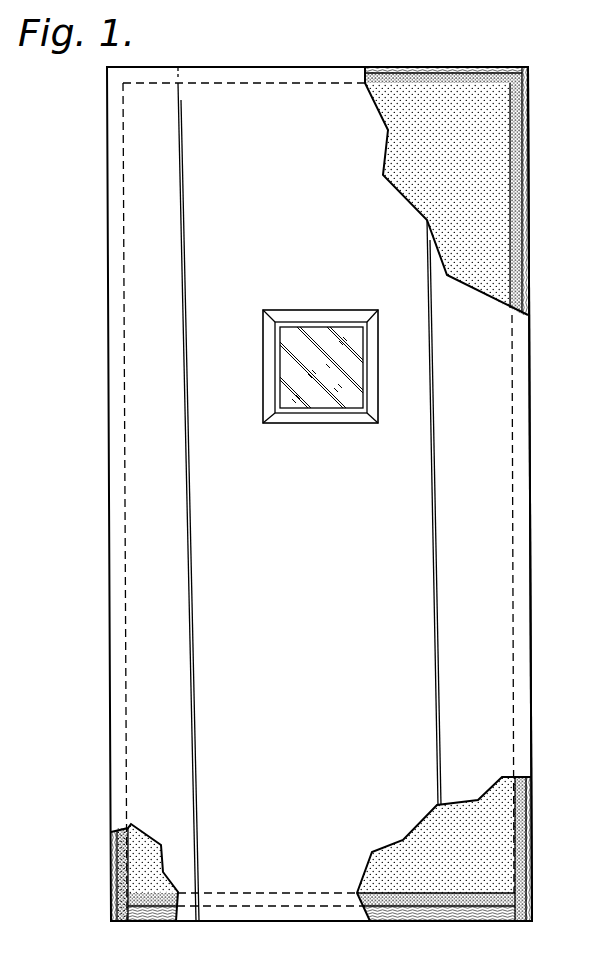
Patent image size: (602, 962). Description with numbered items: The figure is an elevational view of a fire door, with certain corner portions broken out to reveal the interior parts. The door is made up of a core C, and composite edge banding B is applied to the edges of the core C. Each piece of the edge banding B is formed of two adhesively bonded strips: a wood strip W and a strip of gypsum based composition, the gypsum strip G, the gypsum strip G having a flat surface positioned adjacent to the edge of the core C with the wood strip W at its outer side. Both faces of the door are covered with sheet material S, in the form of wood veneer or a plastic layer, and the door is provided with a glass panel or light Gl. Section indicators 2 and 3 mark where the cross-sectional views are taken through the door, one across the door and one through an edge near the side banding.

The wood strip W is at (438, 76).
The gypsum strip G is at (433, 78).
The core C is at (465, 142).
The sheet material S is at (377, 209).
The edge banding B is at (532, 226).
The glass panel or light Gl is at (299, 342).
The section line 2- 2 is at (317, 155).
The section line 3- 3 is at (560, 482).